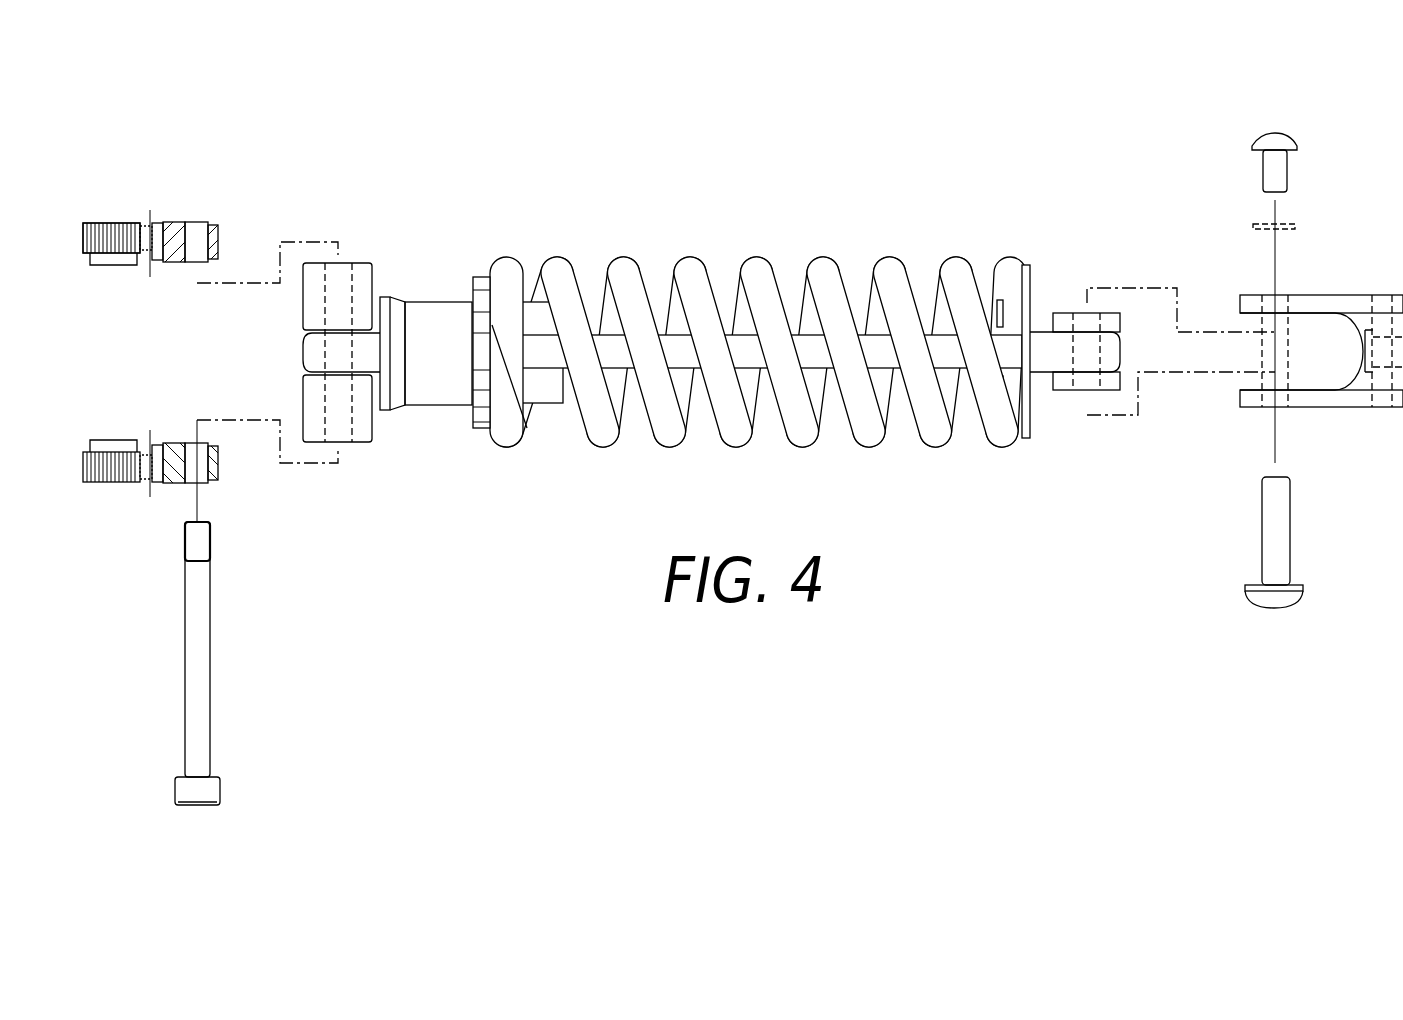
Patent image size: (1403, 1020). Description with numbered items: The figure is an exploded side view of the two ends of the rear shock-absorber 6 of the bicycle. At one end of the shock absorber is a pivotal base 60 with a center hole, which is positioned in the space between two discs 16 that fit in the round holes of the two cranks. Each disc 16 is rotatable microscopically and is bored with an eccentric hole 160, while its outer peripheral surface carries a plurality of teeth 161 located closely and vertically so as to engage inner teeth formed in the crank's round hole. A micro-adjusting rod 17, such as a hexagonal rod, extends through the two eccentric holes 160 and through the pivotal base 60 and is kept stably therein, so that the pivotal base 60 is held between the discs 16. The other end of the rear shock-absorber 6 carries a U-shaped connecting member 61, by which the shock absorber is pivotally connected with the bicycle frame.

The rear shock-absorber 6 is at (816, 221).
The pivotal base 60 is at (368, 422).
The U-shaped connecting member 61 is at (1325, 300).
The disc 16 is at (120, 267).
The eccentric hole 160 is at (197, 283).
The teeth 161 is at (118, 228).
The micro-adjusting rod 17 is at (197, 680).